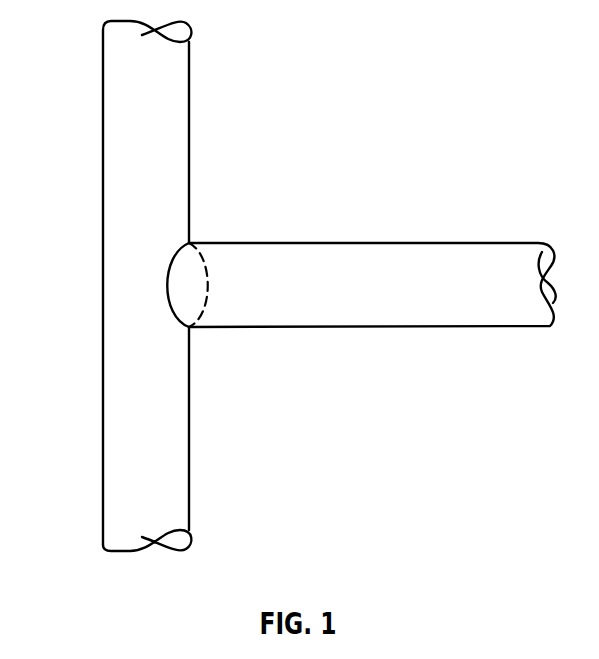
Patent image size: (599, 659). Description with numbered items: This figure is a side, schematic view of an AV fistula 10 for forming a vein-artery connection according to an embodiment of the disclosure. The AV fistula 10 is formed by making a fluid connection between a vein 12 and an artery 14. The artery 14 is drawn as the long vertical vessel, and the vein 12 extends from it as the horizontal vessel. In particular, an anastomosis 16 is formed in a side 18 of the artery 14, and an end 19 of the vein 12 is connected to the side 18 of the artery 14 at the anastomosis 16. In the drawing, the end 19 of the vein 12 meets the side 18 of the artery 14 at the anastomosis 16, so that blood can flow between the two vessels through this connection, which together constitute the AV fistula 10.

The AV fistula 10 is at (327, 43).
The vein 12 is at (450, 274).
The artery 14 is at (113, 123).
The anastomosis 16 is at (197, 281).
The side of the artery 18 is at (181, 410).
The end of the vein 19 is at (242, 258).